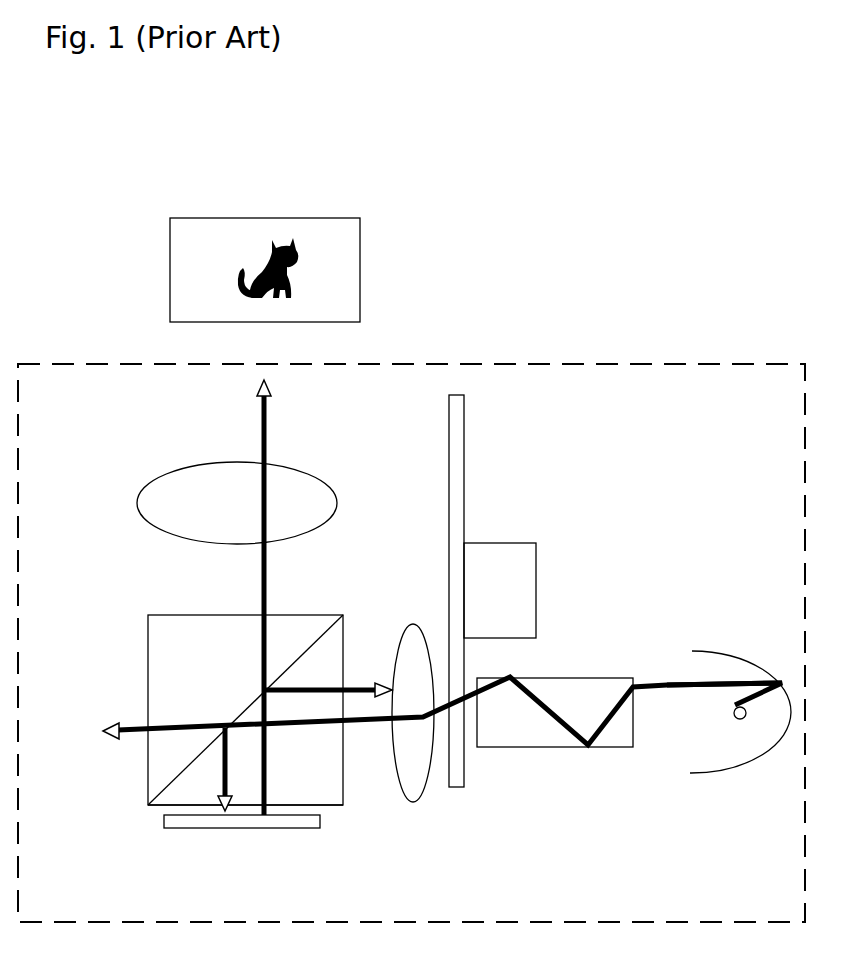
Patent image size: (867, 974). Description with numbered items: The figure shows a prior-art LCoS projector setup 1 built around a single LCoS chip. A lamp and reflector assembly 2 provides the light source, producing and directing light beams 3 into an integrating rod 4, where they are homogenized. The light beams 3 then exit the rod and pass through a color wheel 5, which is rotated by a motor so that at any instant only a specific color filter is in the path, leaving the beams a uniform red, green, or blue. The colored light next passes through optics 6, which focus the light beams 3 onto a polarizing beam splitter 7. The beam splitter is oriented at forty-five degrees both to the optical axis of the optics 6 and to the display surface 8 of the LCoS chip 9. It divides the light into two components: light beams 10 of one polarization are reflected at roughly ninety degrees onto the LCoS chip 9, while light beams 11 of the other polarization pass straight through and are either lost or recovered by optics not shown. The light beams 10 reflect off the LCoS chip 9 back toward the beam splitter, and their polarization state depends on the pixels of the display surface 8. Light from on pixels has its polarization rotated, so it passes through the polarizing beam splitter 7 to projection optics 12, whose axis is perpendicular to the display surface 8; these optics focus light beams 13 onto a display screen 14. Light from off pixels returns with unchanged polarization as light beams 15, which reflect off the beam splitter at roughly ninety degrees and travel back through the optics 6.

The projector setup 1 is at (478, 325).
The lamp and reflector assembly 2 is at (731, 772).
The light beams 3 is at (667, 681).
The integrating rod 4 is at (580, 677).
The color wheel 5 is at (515, 535).
The optics 6 is at (410, 805).
The polarizing beam splitter 7 is at (313, 615).
The display surface 8 is at (242, 808).
The LCoS chip 9 is at (226, 828).
The light beams having P polarization 10 is at (220, 780).
The light beams having S polarization 11 is at (177, 720).
The projection optics 12 is at (285, 463).
The light beams 13 is at (261, 585).
The display screen 14 is at (331, 218).
The light beams 15 is at (370, 680).